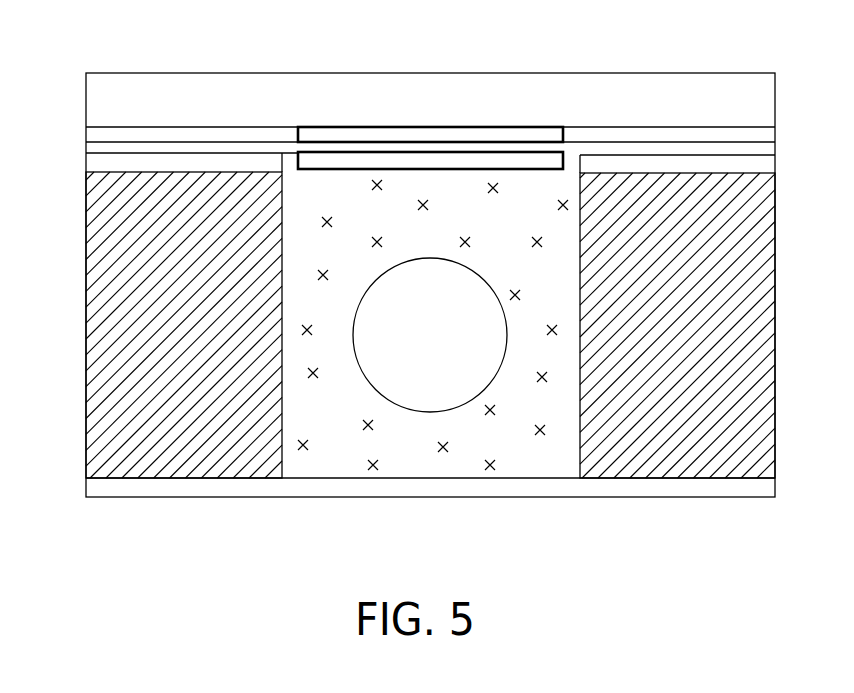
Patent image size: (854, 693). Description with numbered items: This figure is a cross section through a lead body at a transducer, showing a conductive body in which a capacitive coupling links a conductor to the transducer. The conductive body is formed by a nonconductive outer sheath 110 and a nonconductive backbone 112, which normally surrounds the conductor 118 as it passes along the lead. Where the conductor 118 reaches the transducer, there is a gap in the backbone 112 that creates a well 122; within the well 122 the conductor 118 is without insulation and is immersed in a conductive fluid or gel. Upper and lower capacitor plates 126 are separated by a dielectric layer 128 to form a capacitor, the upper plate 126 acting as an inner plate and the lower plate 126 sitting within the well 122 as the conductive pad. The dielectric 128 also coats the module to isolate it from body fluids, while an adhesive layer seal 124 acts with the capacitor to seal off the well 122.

The outer sheath 110 is at (380, 503).
The backbone 112 is at (148, 297).
The conductor 118 is at (387, 355).
The well 122 is at (316, 292).
The adhesive layer seal 124 is at (110, 167).
The capacitor plate 126 is at (398, 157).
The dielectric layer 128 is at (289, 141).